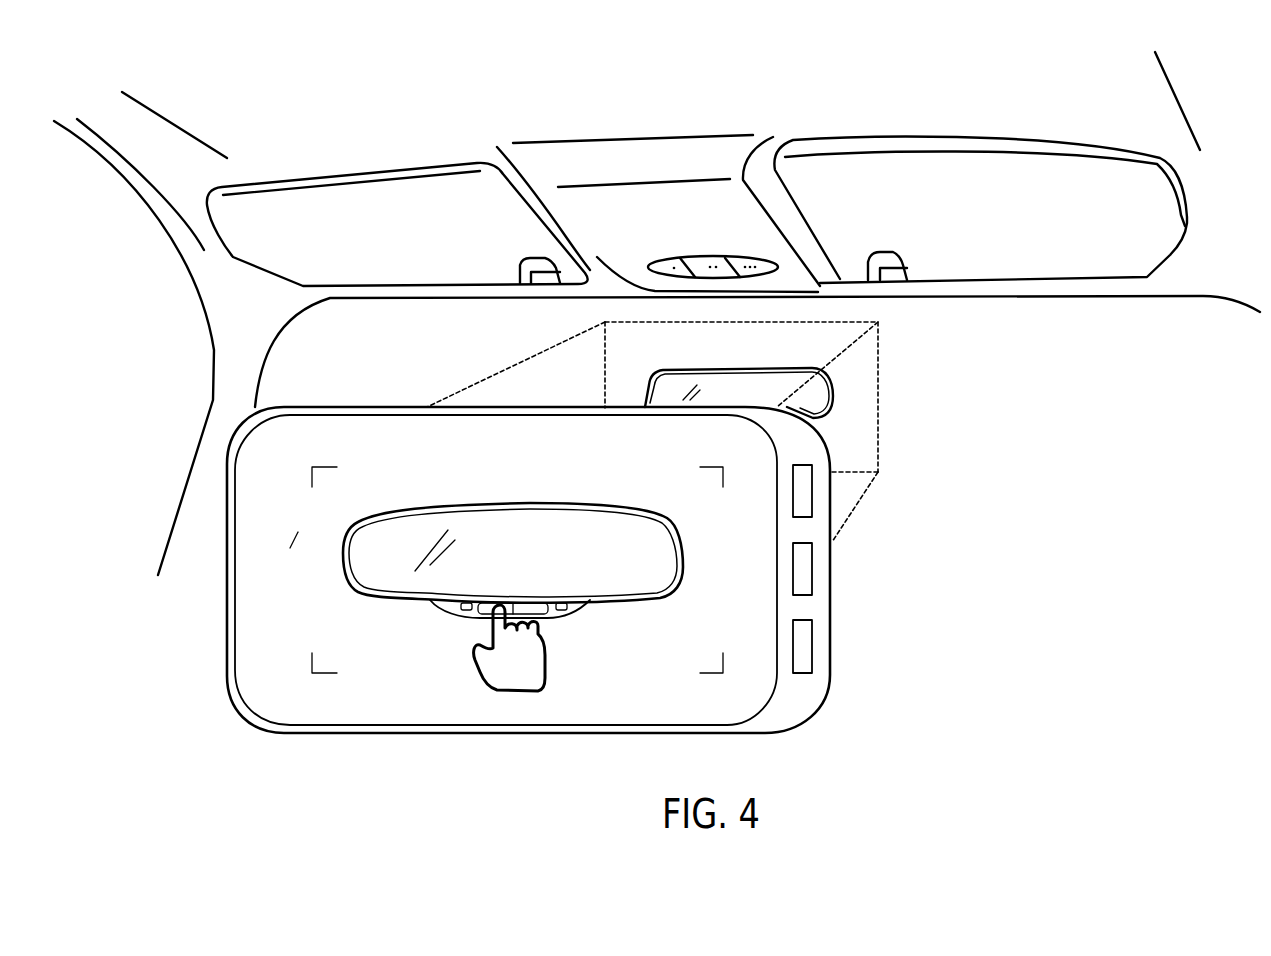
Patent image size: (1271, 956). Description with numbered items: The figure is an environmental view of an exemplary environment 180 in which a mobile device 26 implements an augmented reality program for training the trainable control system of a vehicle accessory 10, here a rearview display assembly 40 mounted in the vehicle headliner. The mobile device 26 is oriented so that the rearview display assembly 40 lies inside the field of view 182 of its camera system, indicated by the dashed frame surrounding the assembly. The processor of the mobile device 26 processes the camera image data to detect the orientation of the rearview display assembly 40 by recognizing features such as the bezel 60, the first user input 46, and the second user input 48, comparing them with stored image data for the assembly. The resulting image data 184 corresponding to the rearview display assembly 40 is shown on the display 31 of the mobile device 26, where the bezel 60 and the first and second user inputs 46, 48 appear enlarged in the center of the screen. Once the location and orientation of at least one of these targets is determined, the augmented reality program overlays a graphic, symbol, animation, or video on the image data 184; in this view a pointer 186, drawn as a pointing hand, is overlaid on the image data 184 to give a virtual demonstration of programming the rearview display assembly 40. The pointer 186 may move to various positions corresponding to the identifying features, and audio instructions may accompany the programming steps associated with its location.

The vehicle accessory 10 is at (642, 474).
The bezel 60 is at (748, 370).
The rearview display assembly 40 is at (835, 408).
The field of view 182 is at (880, 388).
The image data 184 is at (350, 522).
The display 31 is at (268, 645).
The mobile device 26 is at (832, 617).
The first user input 46 is at (478, 617).
The second user input 48 is at (548, 620).
The pointer 186 is at (507, 690).
The exemplary environment 180 is at (1107, 578).